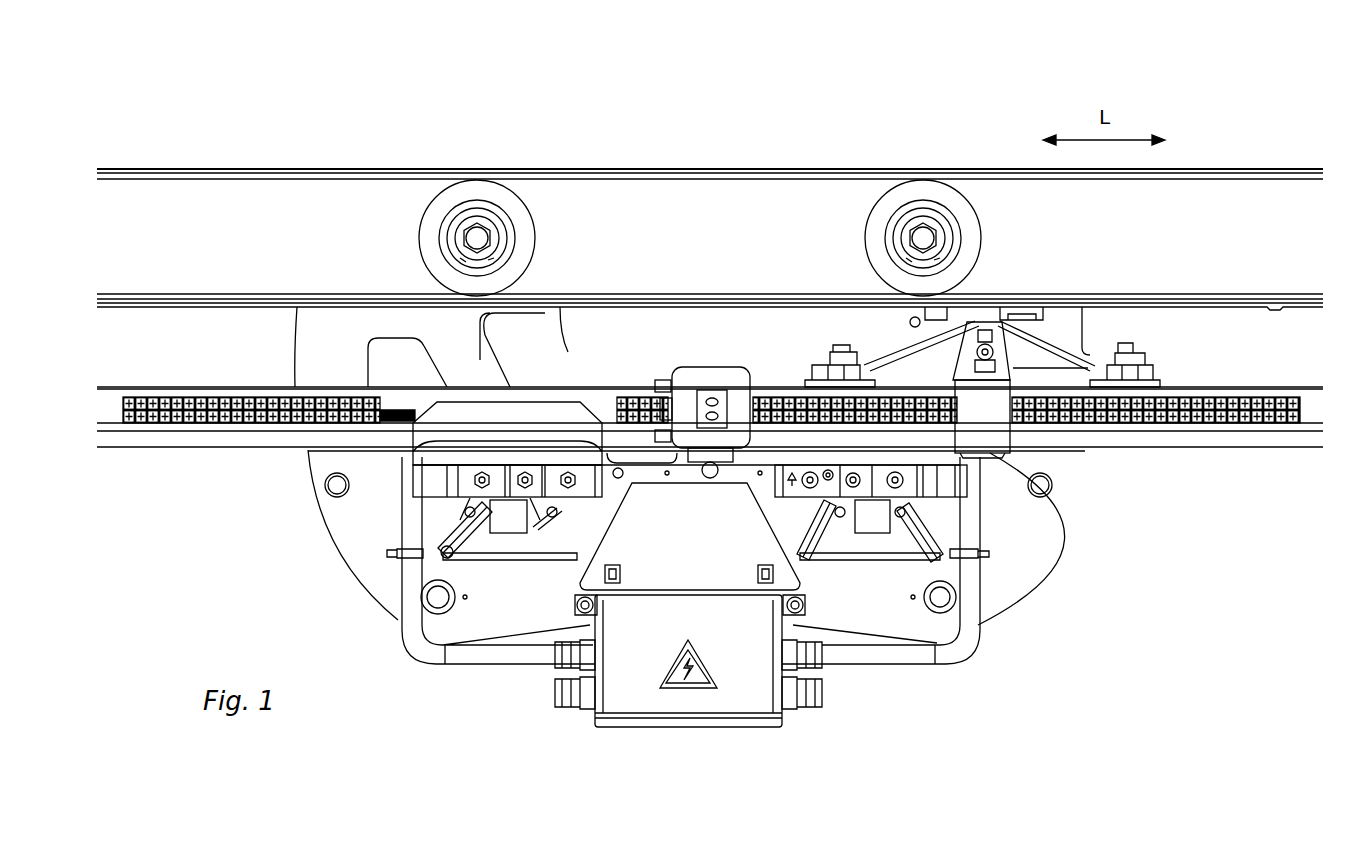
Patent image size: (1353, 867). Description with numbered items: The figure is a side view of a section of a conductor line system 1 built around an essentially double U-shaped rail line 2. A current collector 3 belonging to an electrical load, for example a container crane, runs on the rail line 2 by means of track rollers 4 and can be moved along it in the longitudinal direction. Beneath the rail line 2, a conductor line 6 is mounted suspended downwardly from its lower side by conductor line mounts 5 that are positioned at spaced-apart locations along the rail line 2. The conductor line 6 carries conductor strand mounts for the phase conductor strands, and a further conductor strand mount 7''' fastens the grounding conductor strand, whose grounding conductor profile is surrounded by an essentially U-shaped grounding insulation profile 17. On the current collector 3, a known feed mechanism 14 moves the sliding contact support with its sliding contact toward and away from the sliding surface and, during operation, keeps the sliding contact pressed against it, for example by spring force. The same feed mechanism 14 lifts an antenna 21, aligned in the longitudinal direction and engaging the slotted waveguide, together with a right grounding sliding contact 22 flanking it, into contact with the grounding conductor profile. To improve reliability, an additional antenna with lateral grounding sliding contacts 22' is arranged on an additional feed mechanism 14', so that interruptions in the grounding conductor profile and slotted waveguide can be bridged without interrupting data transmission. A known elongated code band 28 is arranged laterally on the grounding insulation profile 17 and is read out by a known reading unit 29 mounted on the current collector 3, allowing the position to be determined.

The conductor line system 1 is at (1000, 638).
The rail line 2 is at (1242, 170).
The current collector 3 is at (1020, 560).
The track rollers 4 is at (873, 209).
The conductor line mounts 5 is at (1007, 430).
The conductor line 6 is at (1235, 448).
The conductor strand mount 7''' is at (982, 430).
The feed mechanism 14 is at (507, 610).
The additional feed mechanism 14' is at (870, 611).
The grounding insulation profile 17 is at (147, 447).
The antenna 21 is at (420, 432).
The right grounding sliding contact 22 is at (425, 500).
The lateral grounding sliding contacts 22' is at (949, 517).
The code band 28 is at (207, 422).
The reading unit 29 is at (690, 370).